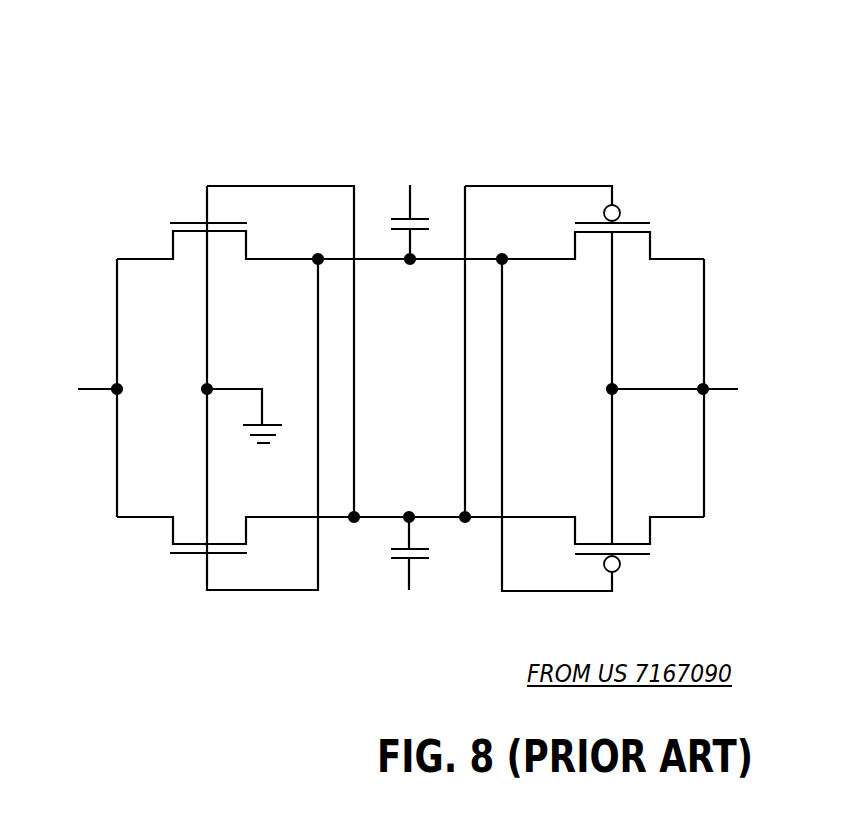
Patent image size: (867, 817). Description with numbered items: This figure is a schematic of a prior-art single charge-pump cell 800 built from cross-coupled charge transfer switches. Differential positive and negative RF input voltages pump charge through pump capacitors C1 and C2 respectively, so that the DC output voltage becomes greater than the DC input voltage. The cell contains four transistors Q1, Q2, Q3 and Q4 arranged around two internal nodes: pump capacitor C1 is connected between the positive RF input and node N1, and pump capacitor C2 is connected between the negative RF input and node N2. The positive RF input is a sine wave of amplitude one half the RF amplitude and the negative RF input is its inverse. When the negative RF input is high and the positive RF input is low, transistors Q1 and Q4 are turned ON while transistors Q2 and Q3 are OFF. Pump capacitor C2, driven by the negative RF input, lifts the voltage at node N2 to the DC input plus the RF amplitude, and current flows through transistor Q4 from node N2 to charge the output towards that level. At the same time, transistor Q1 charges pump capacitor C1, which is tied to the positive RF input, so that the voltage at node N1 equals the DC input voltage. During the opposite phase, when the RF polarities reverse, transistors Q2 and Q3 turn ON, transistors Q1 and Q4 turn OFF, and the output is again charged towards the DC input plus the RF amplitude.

The single charge-pump cell 800 is at (182, 52).
The transistor Q1 is at (217, 241).
The transistor Q2 is at (603, 232).
The transistor Q3 is at (235, 535).
The transistor Q4 is at (584, 544).
The pump capacitor C1 is at (424, 222).
The pump capacitor C2 is at (426, 553).
The node N1 is at (412, 277).
The node N2 is at (410, 503).